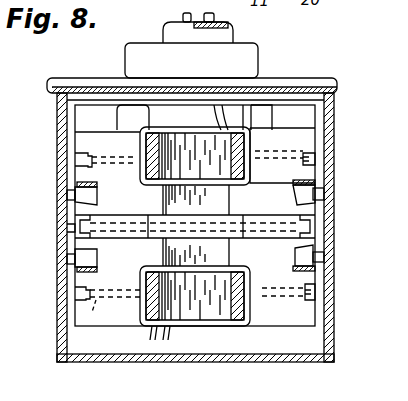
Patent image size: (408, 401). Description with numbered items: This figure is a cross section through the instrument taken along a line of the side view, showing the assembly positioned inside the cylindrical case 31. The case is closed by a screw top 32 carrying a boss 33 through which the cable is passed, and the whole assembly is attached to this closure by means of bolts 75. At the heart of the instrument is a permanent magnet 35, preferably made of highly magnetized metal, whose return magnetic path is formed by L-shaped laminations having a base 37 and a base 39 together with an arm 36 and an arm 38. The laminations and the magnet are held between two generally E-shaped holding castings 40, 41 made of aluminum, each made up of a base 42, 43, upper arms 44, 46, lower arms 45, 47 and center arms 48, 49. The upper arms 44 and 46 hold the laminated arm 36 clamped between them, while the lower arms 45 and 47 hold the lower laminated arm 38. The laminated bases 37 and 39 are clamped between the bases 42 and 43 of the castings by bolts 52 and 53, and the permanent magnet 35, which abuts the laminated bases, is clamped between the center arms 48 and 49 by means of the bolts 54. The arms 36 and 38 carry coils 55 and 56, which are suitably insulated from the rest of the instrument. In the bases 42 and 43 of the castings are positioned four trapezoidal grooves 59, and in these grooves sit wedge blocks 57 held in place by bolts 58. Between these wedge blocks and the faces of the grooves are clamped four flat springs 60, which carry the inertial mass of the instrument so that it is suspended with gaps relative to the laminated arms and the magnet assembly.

The cylindrical case 31 is at (336, 355).
The screw top 32 is at (299, 80).
The boss 33 is at (248, 60).
The permanent magnet 35 is at (195, 226).
The laminated arm 36 is at (203, 130).
The laminated base 37 is at (173, 197).
The laminated arm 38 is at (212, 314).
The laminated base 39 is at (173, 251).
The holding casting 40 is at (293, 138).
The holding casting 41 is at (95, 143).
The base 42 is at (260, 207).
The base 43 is at (111, 203).
The upper arm 44 is at (238, 150).
The lower arm 45 is at (249, 317).
The upper arm 46 is at (152, 151).
The lower arm 47 is at (132, 334).
The center arm 48 is at (281, 233).
The center arm 49 is at (123, 236).
The bolt 52 is at (74, 145).
The bolt 53 is at (322, 143).
The bolt 54 is at (72, 227).
The coil 55 is at (250, 175).
The coil 56 is at (246, 324).
The wedge block 57 is at (80, 202).
The bolt 58 is at (72, 189).
The trapezoidal groove 59 is at (94, 194).
The flat spring 60 is at (78, 185).
The bolt 75 is at (127, 115).